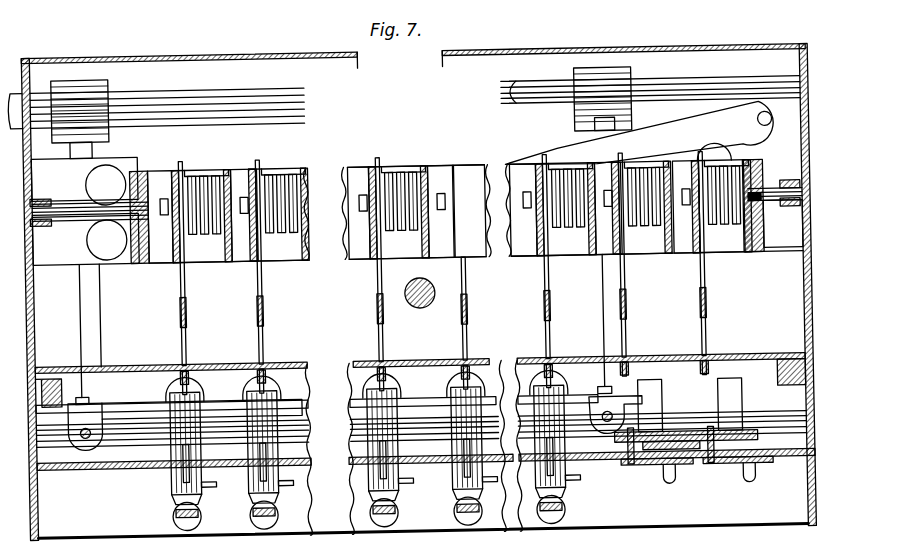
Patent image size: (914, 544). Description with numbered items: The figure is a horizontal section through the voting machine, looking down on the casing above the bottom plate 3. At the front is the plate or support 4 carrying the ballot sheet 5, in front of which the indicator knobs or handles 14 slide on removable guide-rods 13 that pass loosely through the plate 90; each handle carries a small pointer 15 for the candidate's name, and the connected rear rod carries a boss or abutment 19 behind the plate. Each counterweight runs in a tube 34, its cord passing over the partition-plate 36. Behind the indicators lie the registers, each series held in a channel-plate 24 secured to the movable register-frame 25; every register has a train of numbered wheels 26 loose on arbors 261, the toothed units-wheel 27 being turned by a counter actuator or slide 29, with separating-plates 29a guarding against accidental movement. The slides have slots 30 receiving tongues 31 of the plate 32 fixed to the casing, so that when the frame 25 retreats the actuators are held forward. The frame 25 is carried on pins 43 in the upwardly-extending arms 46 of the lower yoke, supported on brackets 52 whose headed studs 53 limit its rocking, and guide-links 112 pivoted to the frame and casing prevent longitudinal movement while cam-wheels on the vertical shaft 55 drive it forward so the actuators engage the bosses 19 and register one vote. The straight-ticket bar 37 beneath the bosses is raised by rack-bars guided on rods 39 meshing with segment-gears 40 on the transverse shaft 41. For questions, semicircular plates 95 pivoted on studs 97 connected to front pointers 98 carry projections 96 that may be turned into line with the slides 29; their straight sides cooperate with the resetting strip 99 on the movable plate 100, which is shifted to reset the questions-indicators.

The bottom plate 3 is at (106, 240).
The plate or support 4 is at (344, 428).
The ballot sheet 5 is at (148, 464).
The guide-rods 13 is at (204, 496).
The knob or handle 14 is at (172, 511).
The pointers 15 is at (214, 481).
The boss or abutment 19 is at (272, 406).
The channel-plate 24 is at (310, 180).
The register-frame 25 is at (143, 259).
The numbered wheels 26 is at (588, 232).
The units-wheel 27 is at (560, 240).
The counter actuators or slides 29 is at (186, 297).
The separating-plates 29a is at (380, 216).
The slots 30 is at (186, 344).
The tongues 31 is at (189, 366).
The plate 32 is at (134, 360).
The tube 34 is at (204, 388).
The partition-plate 36 is at (350, 424).
The straight-ticket bar 37 is at (124, 403).
The rods 39 is at (84, 434).
The segment-gears 40 is at (80, 324).
The shaft 41 is at (302, 100).
The pins 43 is at (785, 186).
The upwardly-extending arms 46 is at (48, 222).
The brackets 52 is at (415, 166).
The headed studs 53 is at (118, 163).
The vertical shaft 55 is at (423, 306).
The plate 90 is at (434, 512).
The semicircular plates 95 is at (665, 436).
The projections 96 is at (690, 405).
The stud 97 is at (628, 470).
The pointer 98 is at (660, 472).
The resetting strip or plate 99 is at (692, 436).
The movable plate 100 is at (680, 470).
The guide-links 112 is at (639, 133).
The arbors 261 is at (528, 208).